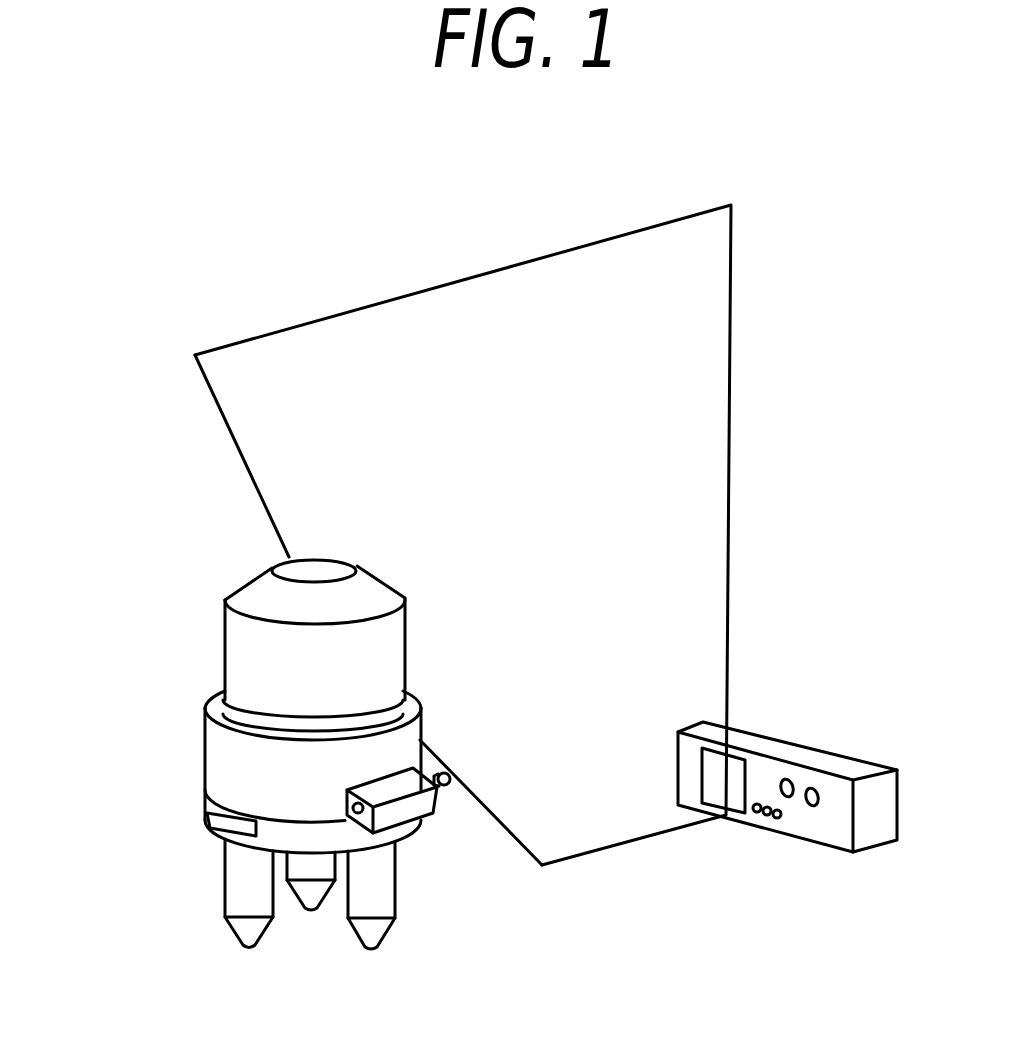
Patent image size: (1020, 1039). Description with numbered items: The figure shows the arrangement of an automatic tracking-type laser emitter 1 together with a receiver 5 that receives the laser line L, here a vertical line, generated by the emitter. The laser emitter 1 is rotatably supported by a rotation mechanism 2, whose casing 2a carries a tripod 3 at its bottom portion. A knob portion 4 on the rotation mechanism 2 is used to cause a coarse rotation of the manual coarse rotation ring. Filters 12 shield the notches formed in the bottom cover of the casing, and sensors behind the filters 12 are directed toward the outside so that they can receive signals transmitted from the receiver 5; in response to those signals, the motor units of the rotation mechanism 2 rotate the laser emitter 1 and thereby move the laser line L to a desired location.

The laser line / projected laser plane L is at (733, 323).
The laser emitter 1 is at (374, 574).
The rotation mechanism 2 is at (205, 783).
The casing 2a is at (207, 814).
The filters 12 is at (250, 792).
The tripod 3 is at (400, 898).
The knob portion 4 is at (425, 772).
The receiver 5 is at (863, 857).